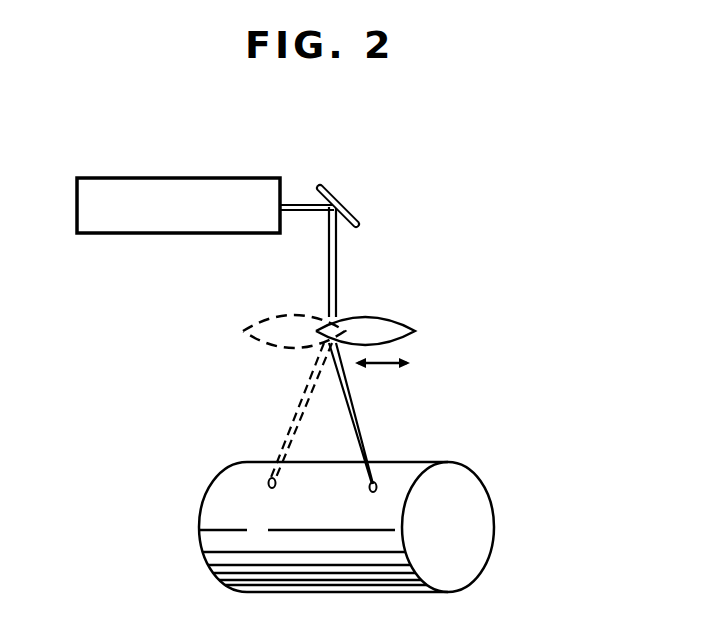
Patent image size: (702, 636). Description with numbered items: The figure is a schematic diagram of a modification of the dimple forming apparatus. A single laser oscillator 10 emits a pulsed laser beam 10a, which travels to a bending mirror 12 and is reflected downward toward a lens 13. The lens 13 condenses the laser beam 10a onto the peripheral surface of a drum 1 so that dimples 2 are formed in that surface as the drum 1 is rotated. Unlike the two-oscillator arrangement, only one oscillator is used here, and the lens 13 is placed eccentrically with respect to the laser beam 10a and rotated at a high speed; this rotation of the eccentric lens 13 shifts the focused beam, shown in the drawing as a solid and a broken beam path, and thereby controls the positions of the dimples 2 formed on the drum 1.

The laser oscillator 10 is at (137, 183).
The laser beam 10a is at (345, 378).
The bending mirror 12 is at (355, 214).
The lens 13 is at (393, 318).
The drum 1 is at (470, 505).
The dimple 2 is at (378, 487).